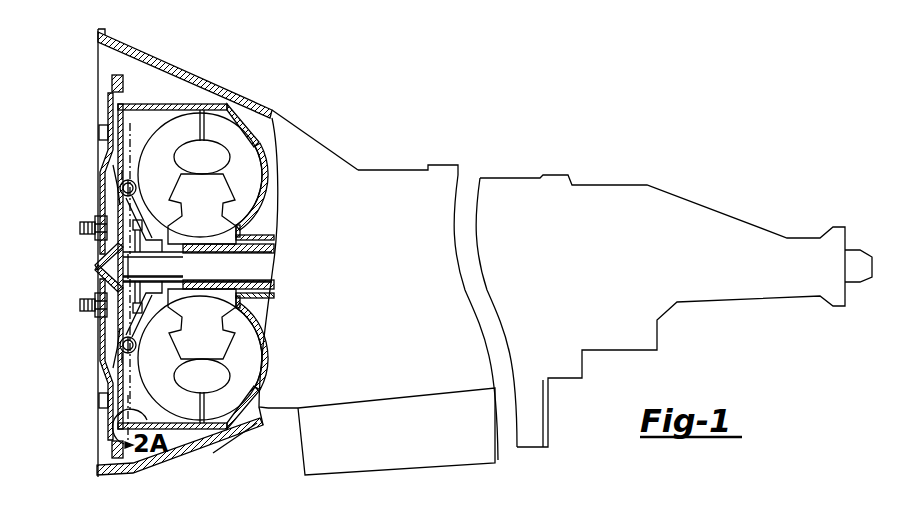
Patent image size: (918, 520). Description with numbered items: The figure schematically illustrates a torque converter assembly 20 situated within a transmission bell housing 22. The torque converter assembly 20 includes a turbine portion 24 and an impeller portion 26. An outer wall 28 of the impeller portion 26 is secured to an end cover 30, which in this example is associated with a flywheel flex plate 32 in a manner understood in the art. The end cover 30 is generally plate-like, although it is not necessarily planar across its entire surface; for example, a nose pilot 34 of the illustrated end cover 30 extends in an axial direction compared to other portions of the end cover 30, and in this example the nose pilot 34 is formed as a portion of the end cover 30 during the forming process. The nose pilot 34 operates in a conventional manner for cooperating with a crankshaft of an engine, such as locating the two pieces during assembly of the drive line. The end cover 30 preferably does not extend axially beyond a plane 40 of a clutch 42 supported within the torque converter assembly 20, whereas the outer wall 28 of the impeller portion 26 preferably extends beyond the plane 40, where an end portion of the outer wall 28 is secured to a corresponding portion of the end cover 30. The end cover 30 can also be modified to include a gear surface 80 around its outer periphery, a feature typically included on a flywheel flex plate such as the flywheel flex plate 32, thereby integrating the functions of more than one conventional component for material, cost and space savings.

The torque converter assembly 20 is at (85, 388).
The transmission bell housing 22 is at (402, 170).
The turbine portion 24 is at (186, 135).
The impeller portion 26 is at (240, 150).
The outer wall 28 is at (202, 103).
The end cover 30 is at (138, 115).
The flywheel flex plate 32 is at (117, 107).
The nose pilot 34 is at (97, 264).
The plane 40 is at (157, 395).
The clutch 42 is at (113, 347).
The gear surface 80 is at (100, 453).